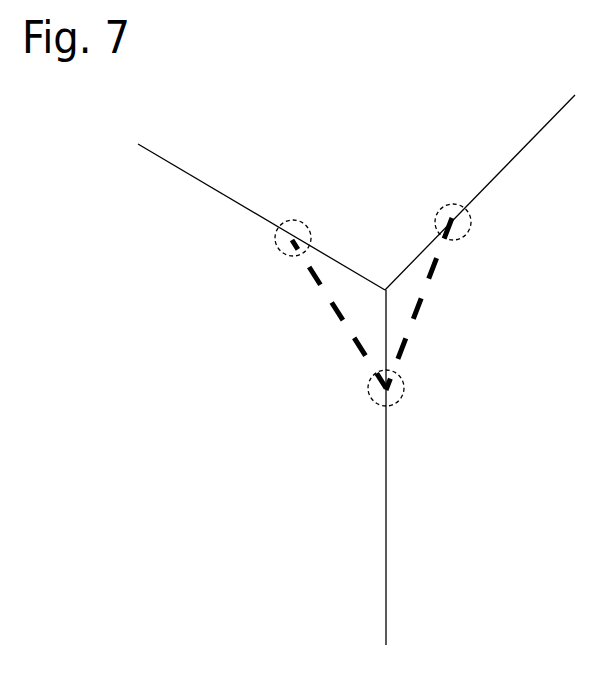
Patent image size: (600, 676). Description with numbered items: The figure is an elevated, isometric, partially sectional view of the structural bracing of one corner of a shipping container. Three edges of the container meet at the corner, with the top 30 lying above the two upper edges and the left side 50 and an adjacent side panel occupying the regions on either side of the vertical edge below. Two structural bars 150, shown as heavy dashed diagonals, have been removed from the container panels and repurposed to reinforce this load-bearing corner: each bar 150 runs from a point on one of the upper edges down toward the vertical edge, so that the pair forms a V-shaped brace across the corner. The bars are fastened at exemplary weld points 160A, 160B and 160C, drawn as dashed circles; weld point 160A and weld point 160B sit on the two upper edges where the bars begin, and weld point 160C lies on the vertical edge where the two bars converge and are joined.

The top 30 is at (368, 118).
The left side 50 is at (197, 408).
The structural bars 150 is at (328, 298).
The weld point 160A is at (290, 215).
The weld point 160B is at (455, 203).
The weld point 160C is at (401, 399).